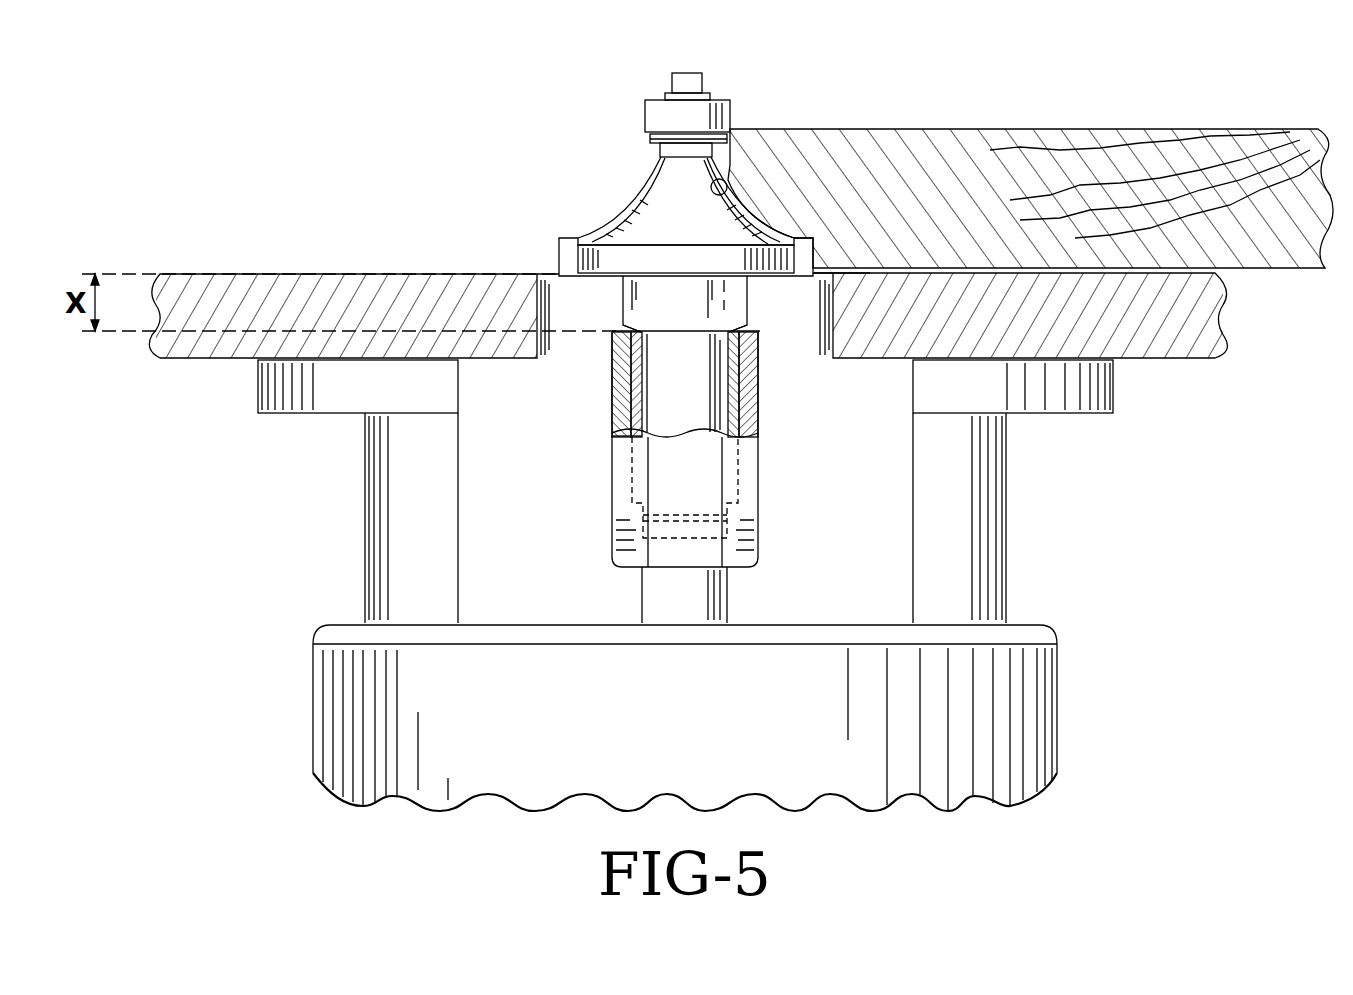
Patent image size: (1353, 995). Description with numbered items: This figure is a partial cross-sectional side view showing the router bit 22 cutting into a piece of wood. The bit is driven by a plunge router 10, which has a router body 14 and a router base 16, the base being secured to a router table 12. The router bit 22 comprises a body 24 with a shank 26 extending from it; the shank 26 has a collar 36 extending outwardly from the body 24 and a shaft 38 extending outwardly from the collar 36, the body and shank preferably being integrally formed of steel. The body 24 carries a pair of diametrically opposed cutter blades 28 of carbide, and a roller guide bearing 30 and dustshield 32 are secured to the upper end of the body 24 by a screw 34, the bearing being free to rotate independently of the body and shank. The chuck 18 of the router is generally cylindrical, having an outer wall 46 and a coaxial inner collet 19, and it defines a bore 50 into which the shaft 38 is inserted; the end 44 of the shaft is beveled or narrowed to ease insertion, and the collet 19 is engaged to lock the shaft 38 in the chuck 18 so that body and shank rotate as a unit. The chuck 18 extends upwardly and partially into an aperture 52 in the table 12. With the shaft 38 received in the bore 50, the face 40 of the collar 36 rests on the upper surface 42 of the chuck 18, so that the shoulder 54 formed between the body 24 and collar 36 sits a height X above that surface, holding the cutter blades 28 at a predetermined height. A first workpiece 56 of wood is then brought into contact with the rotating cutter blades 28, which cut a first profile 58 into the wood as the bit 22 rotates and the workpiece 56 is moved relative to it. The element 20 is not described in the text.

The plunge router 10 is at (717, 549).
The router table 12 is at (1180, 362).
The router body 14 is at (1050, 700).
The router base 16 is at (312, 405).
The chuck 18 is at (772, 464).
The collet 19 is at (635, 417).
The shaft 20 is at (681, 600).
The router bit 22 is at (654, 171).
The body 24 is at (667, 190).
The shank 26 is at (687, 440).
The cutter blade 28 is at (560, 246).
The roller guide bearing 30 is at (645, 117).
The dustshield 32 is at (650, 140).
The screw 34 is at (688, 80).
The collar 36 is at (683, 293).
The shaft 38 is at (713, 412).
The face 40 is at (683, 332).
The upper surface 42 is at (638, 332).
The end 44 is at (727, 522).
The outer wall 46 is at (620, 390).
The bore 50 is at (715, 355).
The aperture 52 is at (783, 345).
The shoulder 54 is at (780, 275).
The first workpiece 56 is at (1015, 140).
The first profile 58 is at (728, 190).